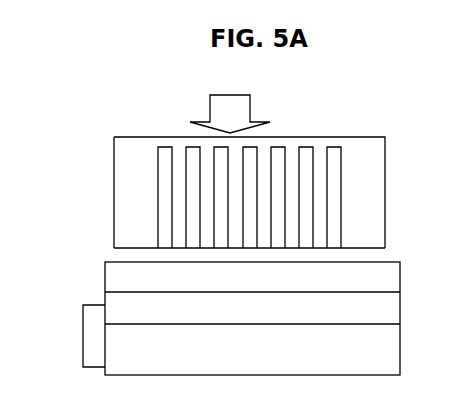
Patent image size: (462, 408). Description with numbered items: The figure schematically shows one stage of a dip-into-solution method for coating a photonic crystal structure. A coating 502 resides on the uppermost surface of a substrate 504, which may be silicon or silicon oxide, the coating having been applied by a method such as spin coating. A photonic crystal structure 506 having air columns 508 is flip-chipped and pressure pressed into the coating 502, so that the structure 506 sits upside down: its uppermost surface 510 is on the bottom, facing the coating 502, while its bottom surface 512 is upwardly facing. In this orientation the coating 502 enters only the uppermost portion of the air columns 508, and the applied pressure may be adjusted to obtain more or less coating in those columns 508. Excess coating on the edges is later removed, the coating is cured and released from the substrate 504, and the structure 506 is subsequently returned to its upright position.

The coating 502 is at (102, 282).
The substrate 504 is at (77, 336).
The photonic crystal structure 506 is at (152, 122).
The air columns 508 is at (333, 200).
The uppermost surface 510 is at (385, 248).
The bottom surface 512 is at (385, 137).